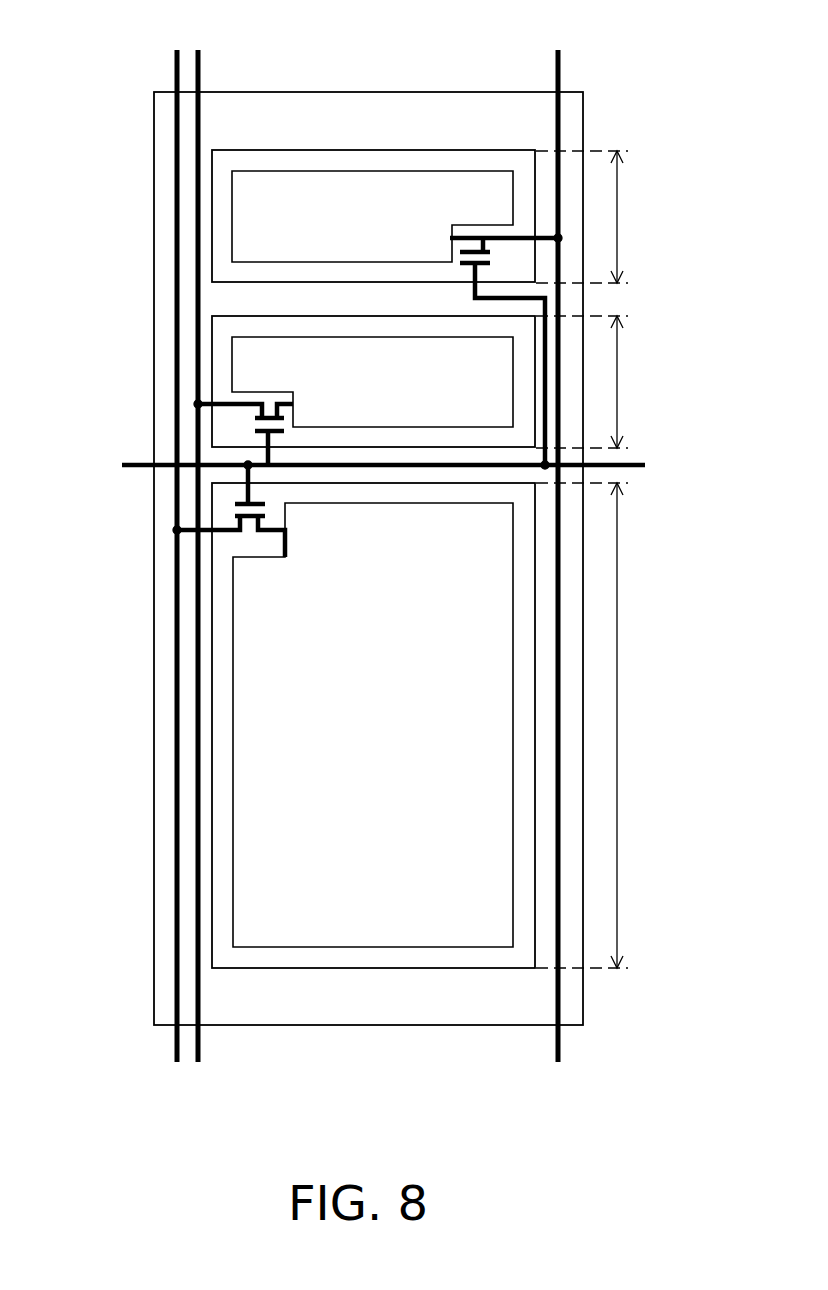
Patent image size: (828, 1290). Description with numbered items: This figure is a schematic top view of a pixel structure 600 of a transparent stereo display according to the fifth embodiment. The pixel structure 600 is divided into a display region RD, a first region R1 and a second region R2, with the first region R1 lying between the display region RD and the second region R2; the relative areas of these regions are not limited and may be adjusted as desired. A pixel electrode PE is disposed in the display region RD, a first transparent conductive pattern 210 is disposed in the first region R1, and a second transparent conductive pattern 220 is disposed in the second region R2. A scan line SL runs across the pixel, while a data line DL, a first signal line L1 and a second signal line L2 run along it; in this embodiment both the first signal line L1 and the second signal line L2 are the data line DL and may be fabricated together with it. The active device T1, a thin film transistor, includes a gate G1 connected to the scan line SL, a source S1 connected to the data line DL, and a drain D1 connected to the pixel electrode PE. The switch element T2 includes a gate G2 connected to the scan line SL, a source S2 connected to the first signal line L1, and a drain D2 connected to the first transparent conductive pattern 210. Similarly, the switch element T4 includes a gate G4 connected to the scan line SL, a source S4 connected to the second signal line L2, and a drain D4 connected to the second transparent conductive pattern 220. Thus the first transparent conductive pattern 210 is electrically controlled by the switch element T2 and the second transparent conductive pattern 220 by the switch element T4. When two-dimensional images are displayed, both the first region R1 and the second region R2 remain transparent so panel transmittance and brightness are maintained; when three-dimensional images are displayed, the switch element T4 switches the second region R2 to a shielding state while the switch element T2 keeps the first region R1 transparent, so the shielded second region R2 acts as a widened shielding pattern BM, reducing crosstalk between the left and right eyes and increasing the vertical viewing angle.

The pixel structure 600 is at (700, 1102).
The shielding pattern BM is at (167, 657).
The data line DL is at (170, 541).
The first signal line L1 is at (202, 541).
The second signal line L2 is at (557, 541).
The scan line SL is at (370, 469).
The second transparent conductive pattern 220 is at (232, 227).
The first transparent conductive pattern 210 is at (232, 350).
The pixel electrode PE is at (233, 802).
The switch element T4 is at (486, 234).
The gate G4 is at (467, 274).
The drain D4 is at (459, 238).
The source S4 is at (525, 237).
The switch element T2 is at (172, 398).
The gate G2 is at (260, 433).
The drain D2 is at (283, 403).
The source S2 is at (225, 403).
The active device T1 is at (168, 537).
The gate G1 is at (245, 500).
The drain D1 is at (268, 532).
The source S1 is at (222, 532).
The second region R2 is at (596, 217).
The first region R1 is at (596, 382).
The display region RD is at (597, 725).